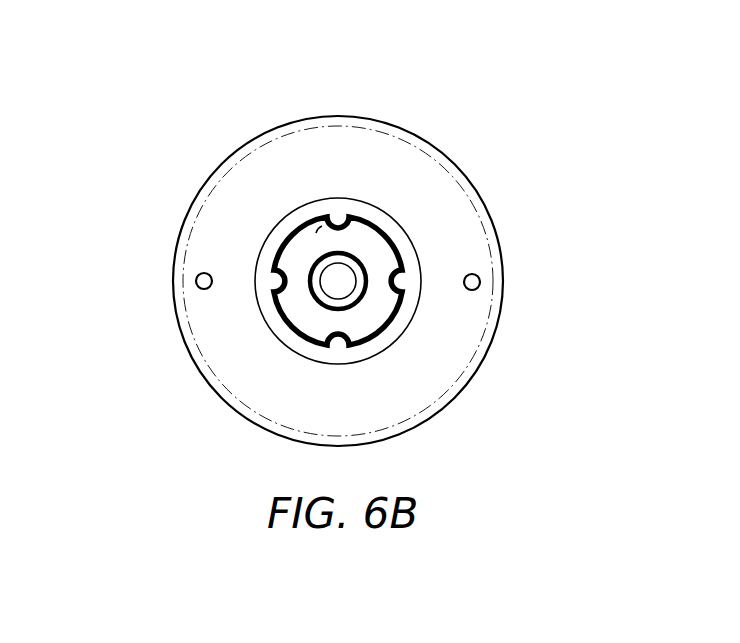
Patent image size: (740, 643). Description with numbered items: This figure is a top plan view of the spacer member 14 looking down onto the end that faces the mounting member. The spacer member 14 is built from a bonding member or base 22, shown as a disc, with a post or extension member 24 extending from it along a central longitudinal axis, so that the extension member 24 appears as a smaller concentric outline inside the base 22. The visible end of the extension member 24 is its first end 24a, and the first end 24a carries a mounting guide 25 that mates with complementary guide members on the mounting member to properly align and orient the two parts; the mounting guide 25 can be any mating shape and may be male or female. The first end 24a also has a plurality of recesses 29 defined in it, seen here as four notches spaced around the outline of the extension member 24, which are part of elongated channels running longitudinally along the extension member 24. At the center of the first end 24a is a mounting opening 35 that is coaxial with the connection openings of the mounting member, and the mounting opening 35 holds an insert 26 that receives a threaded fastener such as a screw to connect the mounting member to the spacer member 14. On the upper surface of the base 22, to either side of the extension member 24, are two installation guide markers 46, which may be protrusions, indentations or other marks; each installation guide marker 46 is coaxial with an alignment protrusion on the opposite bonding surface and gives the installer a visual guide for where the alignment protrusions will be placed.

The spacer member 14 is at (224, 101).
The base 22 is at (227, 172).
The extension member 24 is at (405, 247).
The first end 24a is at (317, 233).
The mounting guide 25 is at (424, 211).
The insert 26 is at (318, 270).
The recesses 29 is at (337, 232).
The mounting opening 35 is at (338, 281).
The installation guide markers 46 is at (196, 281).